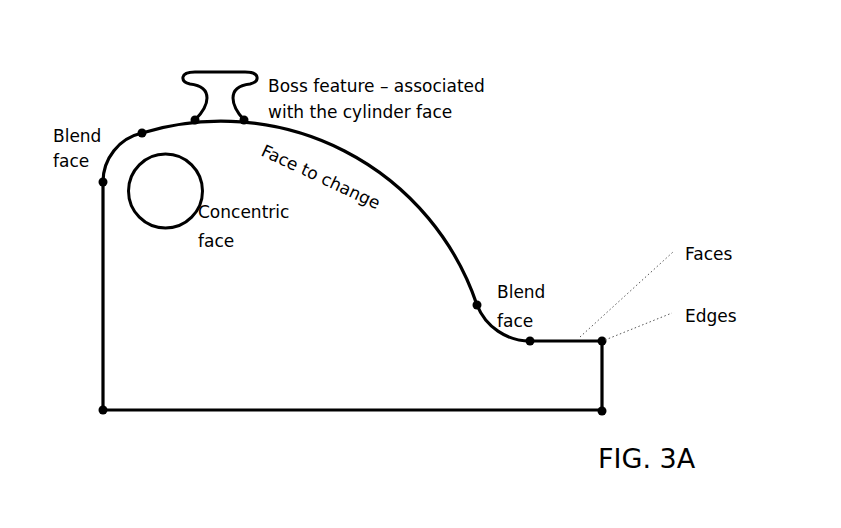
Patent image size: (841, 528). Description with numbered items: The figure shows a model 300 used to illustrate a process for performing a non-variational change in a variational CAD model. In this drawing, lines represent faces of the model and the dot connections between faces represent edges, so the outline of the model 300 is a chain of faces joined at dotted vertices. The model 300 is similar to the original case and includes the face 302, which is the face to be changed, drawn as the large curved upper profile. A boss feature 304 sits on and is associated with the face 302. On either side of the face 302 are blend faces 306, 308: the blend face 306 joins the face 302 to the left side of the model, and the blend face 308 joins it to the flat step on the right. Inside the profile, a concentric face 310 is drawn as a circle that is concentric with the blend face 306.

The model 300 is at (317, 249).
The face 302 is at (458, 235).
The boss feature 304 is at (263, 72).
The blend face 306 is at (119, 125).
The blend face 308 is at (491, 345).
The concentric face 310 is at (129, 228).